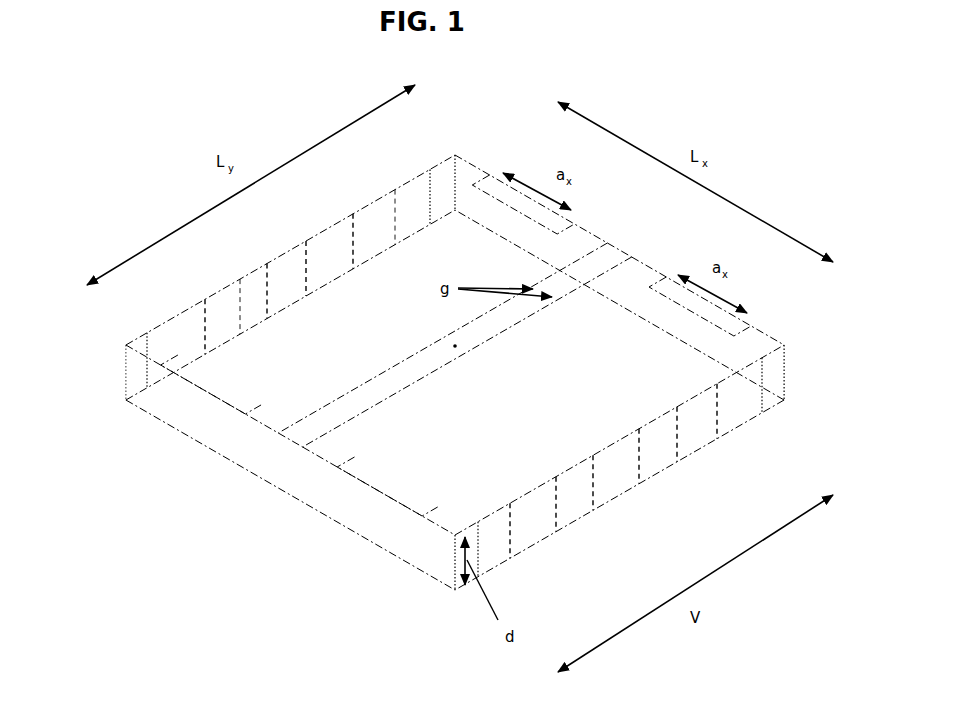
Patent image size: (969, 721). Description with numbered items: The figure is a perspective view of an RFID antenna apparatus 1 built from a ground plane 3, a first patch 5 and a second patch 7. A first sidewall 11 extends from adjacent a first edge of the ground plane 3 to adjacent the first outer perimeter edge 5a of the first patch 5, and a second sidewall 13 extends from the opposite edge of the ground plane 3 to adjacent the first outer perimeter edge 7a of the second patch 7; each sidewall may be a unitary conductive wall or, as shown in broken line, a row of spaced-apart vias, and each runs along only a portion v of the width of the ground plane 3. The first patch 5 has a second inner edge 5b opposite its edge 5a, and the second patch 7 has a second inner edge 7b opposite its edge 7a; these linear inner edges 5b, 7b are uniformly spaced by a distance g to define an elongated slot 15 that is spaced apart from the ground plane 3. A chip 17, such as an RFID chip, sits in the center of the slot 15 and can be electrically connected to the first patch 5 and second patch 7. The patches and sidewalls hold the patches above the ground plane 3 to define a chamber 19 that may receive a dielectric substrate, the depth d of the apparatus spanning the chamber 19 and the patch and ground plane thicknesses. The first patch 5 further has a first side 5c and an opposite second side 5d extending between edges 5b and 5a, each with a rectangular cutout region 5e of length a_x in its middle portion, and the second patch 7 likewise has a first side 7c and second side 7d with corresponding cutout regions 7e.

The antenna apparatus 1 is at (267, 595).
The ground plane 3 is at (307, 509).
The first patch 5 is at (441, 233).
The first outer perimeter edge 5a is at (288, 275).
The second inner edge 5b is at (337, 393).
The first side 5c is at (497, 150).
The second side 5d is at (137, 365).
The cutout region 5e is at (220, 388).
The second patch 7 is at (530, 485).
The first outer perimeter edge 7a is at (619, 451).
The second inner edge 7b is at (510, 327).
The first side 7c is at (656, 264).
The second side 7d is at (432, 543).
The cutout region 7e is at (387, 488).
The first sidewall 11 is at (193, 298).
The second sidewall 13 is at (732, 407).
The slot 15 is at (380, 392).
The chip 17 is at (462, 344).
The chamber 19 is at (300, 430).